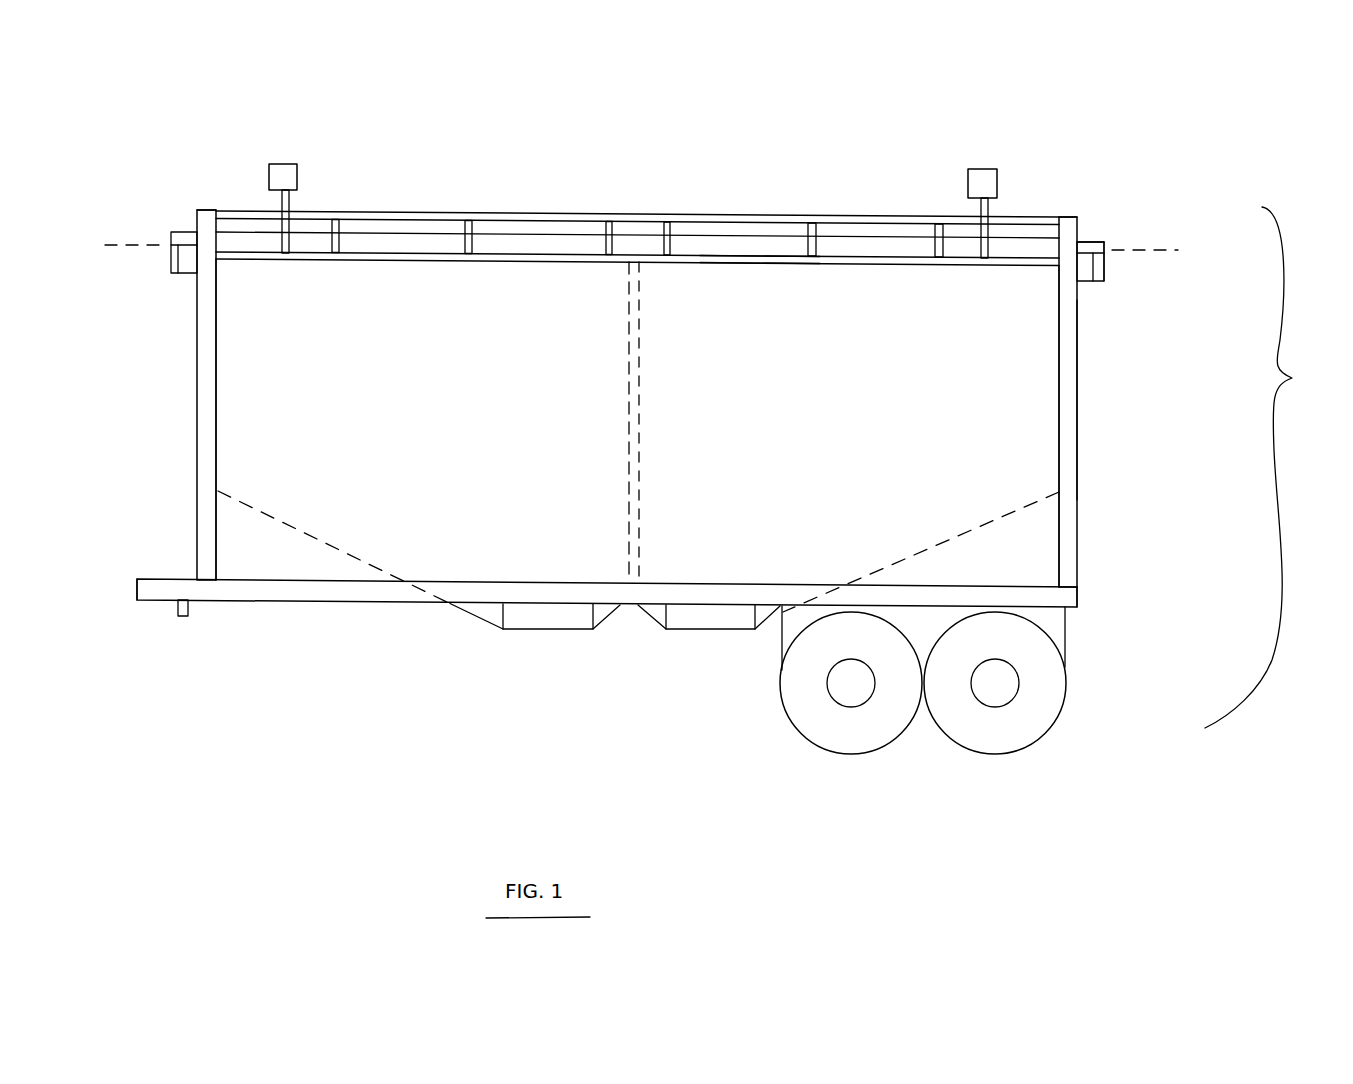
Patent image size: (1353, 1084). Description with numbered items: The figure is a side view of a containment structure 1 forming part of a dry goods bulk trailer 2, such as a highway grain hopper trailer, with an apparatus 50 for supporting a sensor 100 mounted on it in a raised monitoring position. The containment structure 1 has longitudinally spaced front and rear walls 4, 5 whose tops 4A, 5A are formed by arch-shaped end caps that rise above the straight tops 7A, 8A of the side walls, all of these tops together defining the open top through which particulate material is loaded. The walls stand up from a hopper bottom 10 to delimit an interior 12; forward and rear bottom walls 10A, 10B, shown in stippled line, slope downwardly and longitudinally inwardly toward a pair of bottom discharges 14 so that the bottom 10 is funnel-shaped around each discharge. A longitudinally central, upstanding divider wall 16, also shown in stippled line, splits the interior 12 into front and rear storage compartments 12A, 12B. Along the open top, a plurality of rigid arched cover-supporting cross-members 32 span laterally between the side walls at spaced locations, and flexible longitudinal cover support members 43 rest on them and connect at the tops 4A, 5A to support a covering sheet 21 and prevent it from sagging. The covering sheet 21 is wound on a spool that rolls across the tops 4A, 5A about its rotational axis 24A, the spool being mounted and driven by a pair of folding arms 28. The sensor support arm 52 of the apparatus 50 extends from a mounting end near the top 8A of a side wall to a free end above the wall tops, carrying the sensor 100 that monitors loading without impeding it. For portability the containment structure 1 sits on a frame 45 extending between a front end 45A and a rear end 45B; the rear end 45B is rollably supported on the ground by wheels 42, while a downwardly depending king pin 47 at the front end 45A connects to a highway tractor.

The containment structure 1 is at (1080, 438).
The dry goods bulk trailer 2 is at (1261, 467).
The front wall 4 is at (311, 133).
The top of front wall 4A is at (207, 209).
The rear wall 5 is at (1080, 362).
The top of rear wall 5A is at (1067, 214).
The top of side wall 7A is at (771, 258).
The top of side wall 8A is at (760, 263).
The bottom 10 is at (454, 608).
The forward bottom wall 10A is at (350, 556).
The rear bottom wall 10B is at (972, 543).
The interior 12 is at (1034, 348).
The front particulate material storage compartment 12A is at (541, 288).
The rear particulate material storage compartment 12B is at (878, 296).
The bottom discharge 14 is at (566, 640).
The divider wall 16 is at (641, 340).
The covering sheet 21 is at (1162, 207).
The rotational axis of spool 24A is at (1155, 247).
The folding arm 28 is at (170, 265).
The arched cover-supporting cross-member 32 is at (462, 230).
The wheels 42 is at (1010, 755).
The longitudinal cover support member 43 is at (447, 210).
The frame 45 is at (175, 578).
The front end of frame 45A is at (135, 598).
The rear end of frame 45B is at (1082, 600).
The king pin 47 is at (183, 618).
The apparatus 50 is at (300, 176).
The sensor support arm 52 is at (280, 200).
The sensor 100 is at (282, 163).